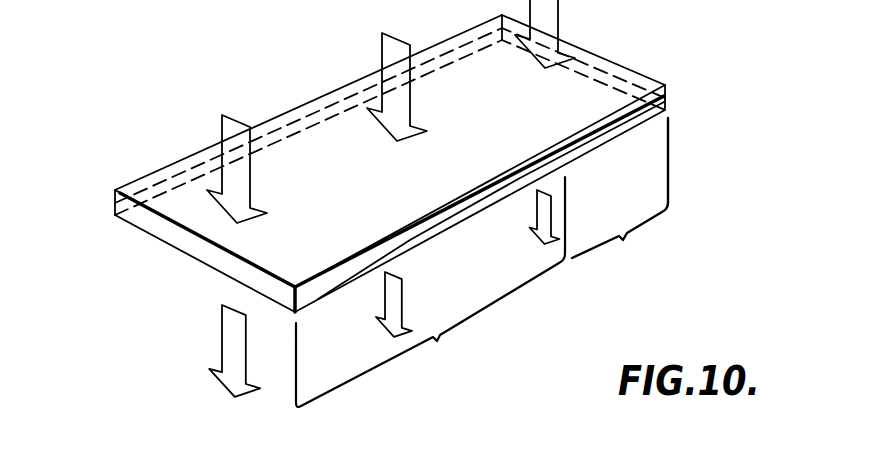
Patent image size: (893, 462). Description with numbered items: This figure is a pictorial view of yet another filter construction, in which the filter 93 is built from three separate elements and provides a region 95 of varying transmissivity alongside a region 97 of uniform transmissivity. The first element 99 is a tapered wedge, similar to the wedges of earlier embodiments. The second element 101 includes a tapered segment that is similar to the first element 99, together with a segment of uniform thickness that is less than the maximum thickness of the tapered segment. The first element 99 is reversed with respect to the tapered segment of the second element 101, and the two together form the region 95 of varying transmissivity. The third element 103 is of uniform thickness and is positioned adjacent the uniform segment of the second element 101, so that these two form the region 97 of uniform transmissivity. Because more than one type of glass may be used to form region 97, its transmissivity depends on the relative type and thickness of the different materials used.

The filter 93 is at (546, 262).
The region of varying transmissivity 95 is at (430, 292).
The region of uniform transmissivity 97 is at (620, 199).
The first element 99 is at (122, 204).
The second element 101 is at (668, 90).
The third element 103 is at (612, 62).